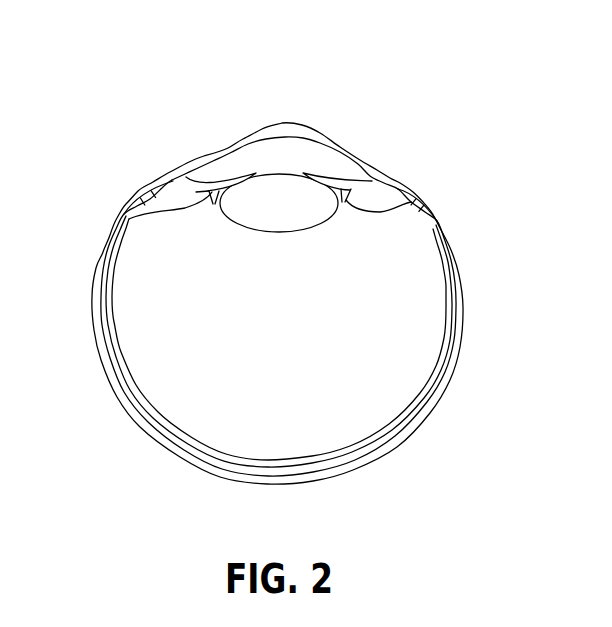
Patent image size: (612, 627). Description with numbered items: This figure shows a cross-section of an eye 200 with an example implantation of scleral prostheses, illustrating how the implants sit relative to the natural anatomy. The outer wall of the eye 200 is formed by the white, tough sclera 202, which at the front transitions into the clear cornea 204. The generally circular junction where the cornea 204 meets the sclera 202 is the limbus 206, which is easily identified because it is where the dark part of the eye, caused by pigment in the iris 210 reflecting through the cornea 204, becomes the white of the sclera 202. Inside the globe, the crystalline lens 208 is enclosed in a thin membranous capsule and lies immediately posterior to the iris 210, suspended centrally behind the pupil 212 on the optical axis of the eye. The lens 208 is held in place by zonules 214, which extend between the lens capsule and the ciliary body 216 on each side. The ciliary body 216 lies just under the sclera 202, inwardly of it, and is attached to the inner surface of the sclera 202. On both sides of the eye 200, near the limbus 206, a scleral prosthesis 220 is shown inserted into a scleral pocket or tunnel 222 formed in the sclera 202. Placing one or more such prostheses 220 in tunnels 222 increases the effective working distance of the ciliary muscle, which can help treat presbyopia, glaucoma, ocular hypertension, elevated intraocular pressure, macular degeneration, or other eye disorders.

The eye 200 is at (84, 71).
The sclera 202 is at (466, 308).
The cornea 204 is at (238, 133).
The limbus 206 is at (178, 172).
The crystalline lens 208 is at (290, 172).
The iris 210 is at (222, 168).
The pupil 212 is at (320, 146).
The zonules 214 is at (211, 208).
The ciliary body 216 is at (193, 212).
The scleral prosthesis 220 is at (123, 210).
The scleral pocket or tunnel 222 is at (158, 188).